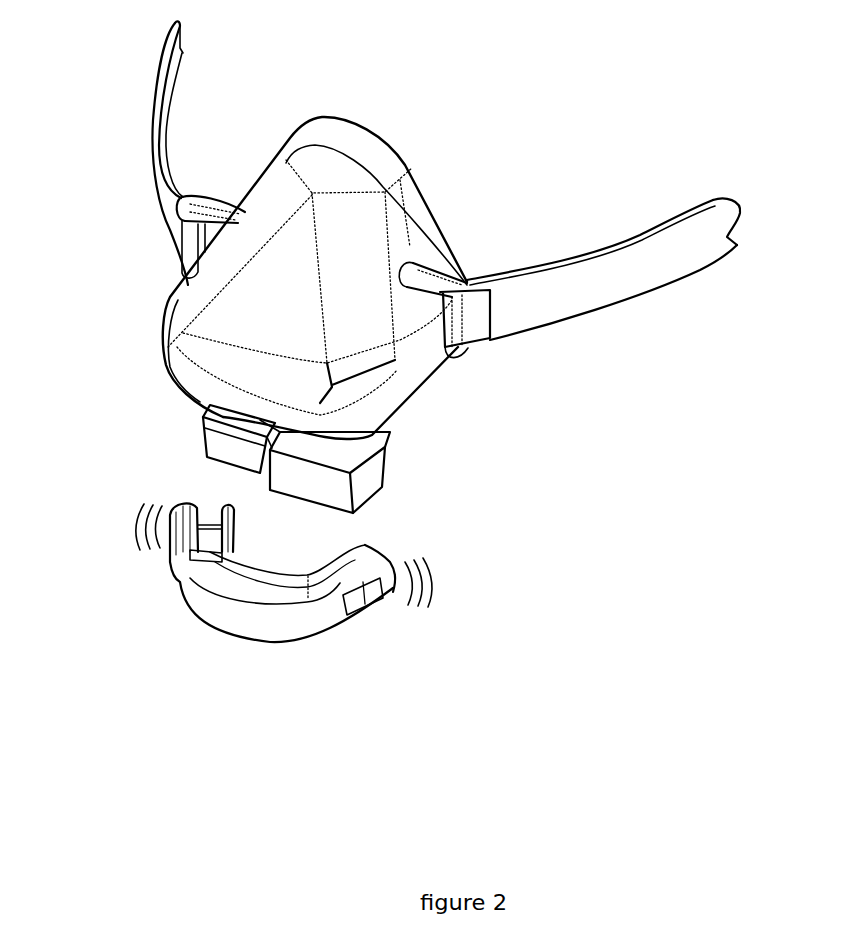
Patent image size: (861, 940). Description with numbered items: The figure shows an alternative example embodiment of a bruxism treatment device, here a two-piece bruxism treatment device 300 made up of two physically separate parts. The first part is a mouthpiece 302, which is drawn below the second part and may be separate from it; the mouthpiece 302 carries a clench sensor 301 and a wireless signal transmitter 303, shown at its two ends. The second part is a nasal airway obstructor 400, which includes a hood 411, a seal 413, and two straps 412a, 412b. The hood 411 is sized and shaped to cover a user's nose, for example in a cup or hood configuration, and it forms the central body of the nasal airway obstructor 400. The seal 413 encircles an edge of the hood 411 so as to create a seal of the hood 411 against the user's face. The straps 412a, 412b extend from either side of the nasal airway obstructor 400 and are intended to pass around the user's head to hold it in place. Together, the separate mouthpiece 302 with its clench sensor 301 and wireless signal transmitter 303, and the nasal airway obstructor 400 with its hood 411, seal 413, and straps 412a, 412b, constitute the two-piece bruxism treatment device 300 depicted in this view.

The two-piece bruxism treatment device 300 is at (540, 405).
The clench sensor 301 is at (187, 598).
The mouthpiece 302 is at (224, 613).
The wireless signal transmitter 303 is at (362, 613).
The nasal airway obstructor 400 is at (355, 328).
The hood 411 is at (260, 318).
The strap 412a is at (157, 78).
The strap 412b is at (640, 280).
The seal 413 is at (412, 202).